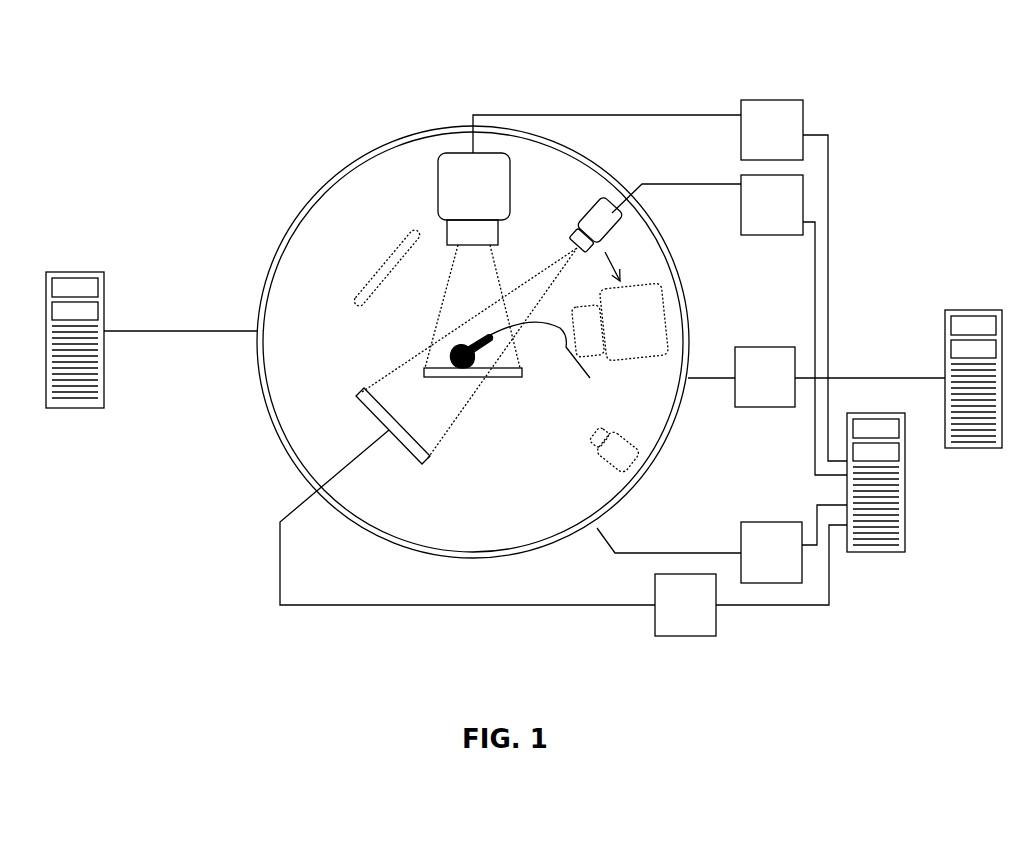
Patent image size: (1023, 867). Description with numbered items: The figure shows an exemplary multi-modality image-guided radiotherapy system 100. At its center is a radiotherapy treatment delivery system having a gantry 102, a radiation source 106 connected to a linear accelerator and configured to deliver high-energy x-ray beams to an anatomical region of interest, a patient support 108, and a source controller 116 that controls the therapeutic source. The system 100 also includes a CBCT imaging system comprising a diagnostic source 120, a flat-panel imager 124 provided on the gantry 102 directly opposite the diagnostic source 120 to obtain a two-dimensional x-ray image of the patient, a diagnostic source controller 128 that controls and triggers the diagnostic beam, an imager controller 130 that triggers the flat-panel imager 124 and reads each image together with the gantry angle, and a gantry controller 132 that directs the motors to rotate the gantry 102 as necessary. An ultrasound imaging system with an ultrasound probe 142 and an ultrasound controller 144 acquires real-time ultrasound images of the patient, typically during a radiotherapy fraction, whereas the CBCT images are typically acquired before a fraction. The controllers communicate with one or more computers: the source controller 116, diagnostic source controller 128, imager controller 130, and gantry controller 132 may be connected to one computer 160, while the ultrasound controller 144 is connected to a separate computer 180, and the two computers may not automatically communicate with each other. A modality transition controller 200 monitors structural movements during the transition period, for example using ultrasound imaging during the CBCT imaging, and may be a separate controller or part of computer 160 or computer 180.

The multi-modality image-guided radiotherapy system 100 is at (290, 175).
The gantry 102 is at (288, 372).
The radiation source 106 is at (460, 163).
The patient support 108 is at (507, 377).
The diagnostic source 120 is at (608, 218).
The flat-panel imager 124 is at (395, 440).
The ultrasound probe 142 is at (541, 338).
The ultrasound controller 144 is at (766, 407).
The source controller 116 is at (772, 130).
The diagnostic source controller 128 is at (777, 196).
The gantry controller 132 is at (783, 570).
The imager controller 130 is at (686, 636).
The modality transition controller 200 is at (67, 380).
The computer 180 is at (965, 418).
The computer 160 is at (877, 540).